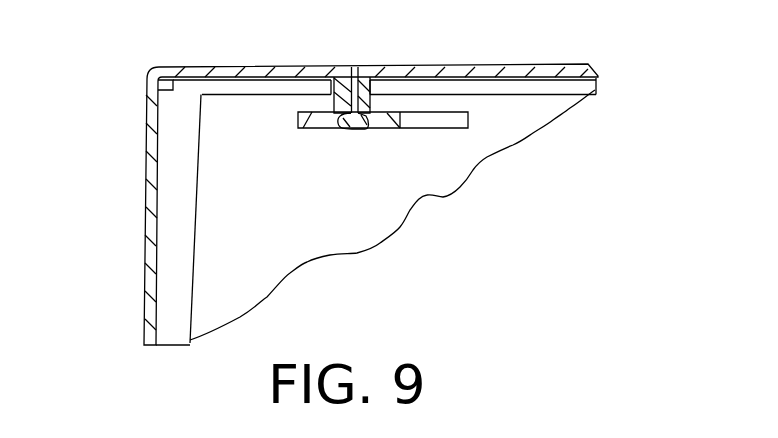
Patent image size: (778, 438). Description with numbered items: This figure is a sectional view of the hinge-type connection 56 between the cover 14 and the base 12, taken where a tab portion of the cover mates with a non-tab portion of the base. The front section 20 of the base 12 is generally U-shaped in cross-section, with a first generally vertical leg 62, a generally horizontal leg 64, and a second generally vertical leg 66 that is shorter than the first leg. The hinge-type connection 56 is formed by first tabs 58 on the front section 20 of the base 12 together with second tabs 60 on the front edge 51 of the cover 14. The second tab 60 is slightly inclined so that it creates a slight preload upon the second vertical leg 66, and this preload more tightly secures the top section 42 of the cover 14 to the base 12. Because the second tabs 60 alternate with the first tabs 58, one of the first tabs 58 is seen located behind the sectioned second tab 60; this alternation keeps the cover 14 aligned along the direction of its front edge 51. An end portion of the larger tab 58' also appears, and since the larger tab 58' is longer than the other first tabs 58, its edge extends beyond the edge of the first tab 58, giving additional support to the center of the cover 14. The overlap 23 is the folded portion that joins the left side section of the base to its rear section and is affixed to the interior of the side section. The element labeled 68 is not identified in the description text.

The base 12 is at (120, 114).
The cover 14 is at (535, 42).
The front section 20 is at (143, 305).
The overlap 23 is at (170, 322).
The top section 42 is at (589, 66).
The front edge 51 is at (354, 66).
The hinge-type connection 56 is at (367, 44).
The first tabs 58 is at (383, 155).
The larger tab 58' is at (433, 146).
The second tab 60 is at (320, 129).
The first generally vertical leg 62 is at (157, 193).
The generally horizontal leg 64 is at (237, 74).
The second generally vertical leg 66 is at (343, 88).
The top liner flange 68 is at (367, 103).